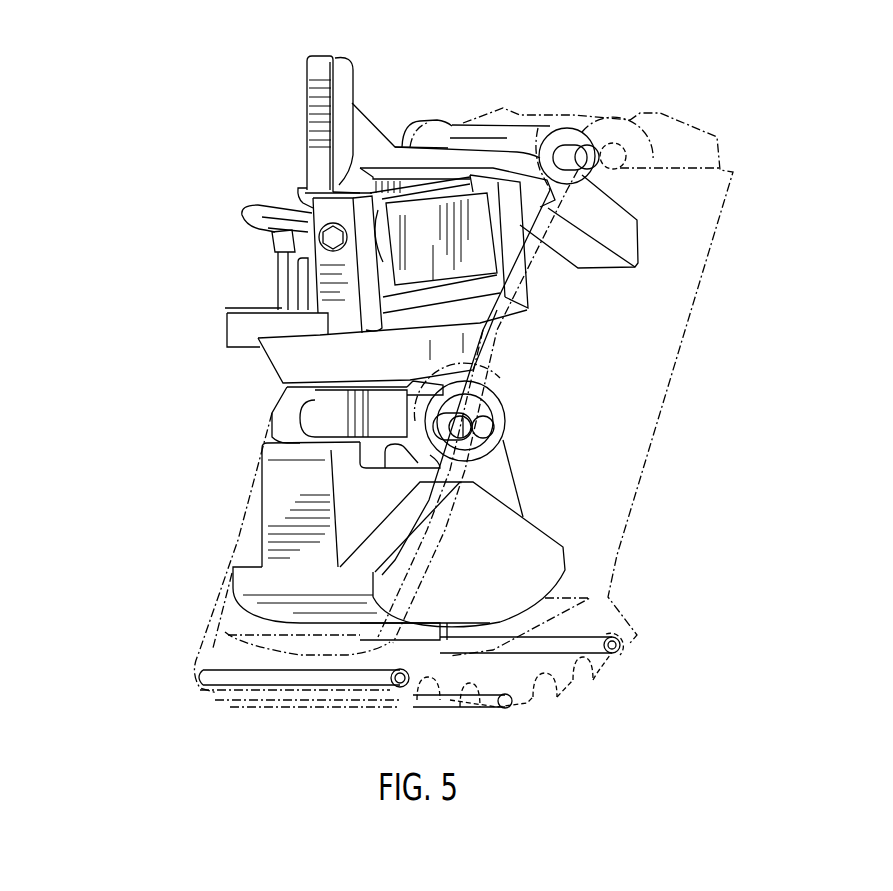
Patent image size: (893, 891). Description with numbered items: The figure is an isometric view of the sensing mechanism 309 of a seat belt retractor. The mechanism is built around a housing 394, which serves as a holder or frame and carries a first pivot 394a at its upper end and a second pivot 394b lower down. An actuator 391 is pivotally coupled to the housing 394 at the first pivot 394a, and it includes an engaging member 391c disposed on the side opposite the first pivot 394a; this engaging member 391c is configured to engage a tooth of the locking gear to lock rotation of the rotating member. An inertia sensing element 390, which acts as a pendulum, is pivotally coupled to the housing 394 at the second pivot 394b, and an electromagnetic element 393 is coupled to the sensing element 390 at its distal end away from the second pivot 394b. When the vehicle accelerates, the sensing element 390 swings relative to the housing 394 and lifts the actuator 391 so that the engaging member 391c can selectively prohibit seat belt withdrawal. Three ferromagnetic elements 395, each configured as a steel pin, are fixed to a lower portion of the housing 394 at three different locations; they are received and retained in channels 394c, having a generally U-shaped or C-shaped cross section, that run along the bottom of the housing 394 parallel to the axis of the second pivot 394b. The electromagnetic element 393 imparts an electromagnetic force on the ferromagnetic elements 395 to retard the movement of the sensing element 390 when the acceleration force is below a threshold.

The sensing mechanism 309 is at (140, 292).
The actuator 391 is at (327, 78).
The engaging member 391c is at (337, 57).
The first pivot 394a is at (610, 157).
The second pivot 394b is at (481, 427).
The electromagnetic element 393 is at (410, 626).
The inertia sensing element 390 is at (250, 580).
The housing 394 is at (202, 651).
The ferromagnetic element 395 is at (620, 650).
The channel 394c is at (468, 699).